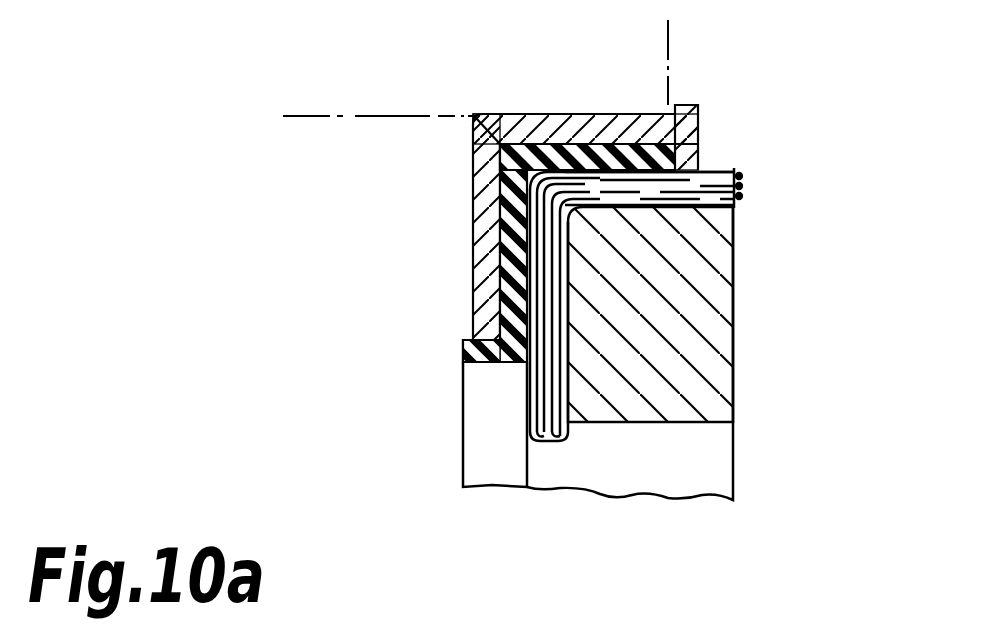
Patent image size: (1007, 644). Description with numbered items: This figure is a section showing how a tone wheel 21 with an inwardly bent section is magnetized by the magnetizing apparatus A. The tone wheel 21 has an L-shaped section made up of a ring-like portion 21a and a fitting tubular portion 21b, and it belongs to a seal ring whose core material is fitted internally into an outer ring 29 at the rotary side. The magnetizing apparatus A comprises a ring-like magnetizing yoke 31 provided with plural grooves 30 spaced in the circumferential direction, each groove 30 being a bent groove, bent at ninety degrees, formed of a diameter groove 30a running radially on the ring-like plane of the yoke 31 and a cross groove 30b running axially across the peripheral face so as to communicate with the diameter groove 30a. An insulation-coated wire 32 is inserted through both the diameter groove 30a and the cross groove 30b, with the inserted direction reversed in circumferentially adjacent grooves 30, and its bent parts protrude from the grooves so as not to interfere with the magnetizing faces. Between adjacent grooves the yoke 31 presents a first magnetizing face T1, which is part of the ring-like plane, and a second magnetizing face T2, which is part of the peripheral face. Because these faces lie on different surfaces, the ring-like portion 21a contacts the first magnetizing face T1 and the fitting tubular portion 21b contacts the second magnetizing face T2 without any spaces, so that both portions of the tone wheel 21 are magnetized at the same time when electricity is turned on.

The tone wheel 21 is at (700, 135).
The ring-like portion 21a is at (512, 287).
The fitting tubular portion 21b is at (610, 152).
The outer ring 29 is at (340, 116).
The groove 30 is at (540, 220).
The diameter groove 30a is at (548, 240).
The cross groove 30b is at (588, 192).
The magnetizing yoke 31 is at (713, 396).
The wire 32 is at (744, 190).
The first magnetizing face T1 is at (524, 397).
The second magnetizing face T2 is at (646, 114).
The magnetizing apparatus for tone wheel A is at (742, 300).